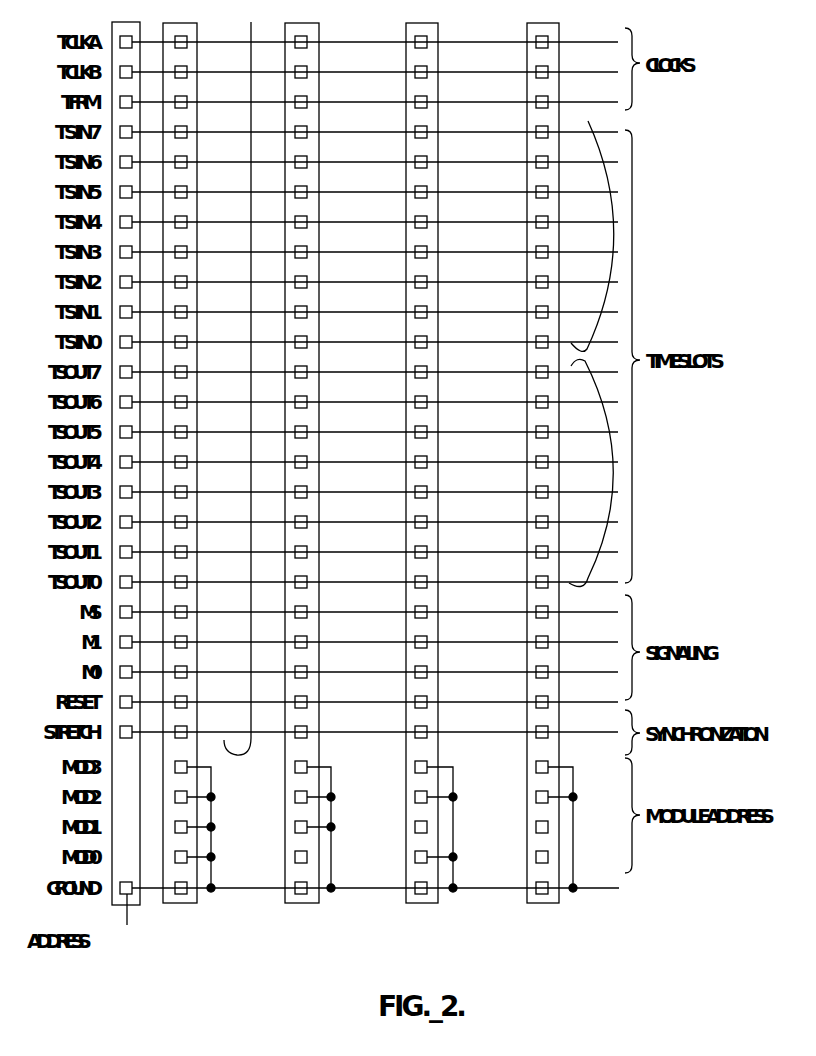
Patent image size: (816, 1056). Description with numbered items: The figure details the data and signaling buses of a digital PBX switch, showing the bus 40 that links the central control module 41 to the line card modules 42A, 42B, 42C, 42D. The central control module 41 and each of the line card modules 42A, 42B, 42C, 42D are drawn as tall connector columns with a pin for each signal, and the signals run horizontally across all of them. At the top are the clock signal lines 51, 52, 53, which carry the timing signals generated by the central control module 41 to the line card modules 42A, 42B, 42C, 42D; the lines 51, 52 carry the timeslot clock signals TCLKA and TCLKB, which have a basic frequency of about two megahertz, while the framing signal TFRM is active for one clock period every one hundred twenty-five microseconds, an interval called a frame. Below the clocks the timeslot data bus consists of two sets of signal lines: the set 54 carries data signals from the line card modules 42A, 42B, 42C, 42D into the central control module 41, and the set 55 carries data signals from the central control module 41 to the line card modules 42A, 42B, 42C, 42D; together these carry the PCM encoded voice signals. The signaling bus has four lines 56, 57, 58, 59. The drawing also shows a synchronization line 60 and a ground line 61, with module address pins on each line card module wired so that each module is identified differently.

The bus 40 is at (228, 36).
The central control module 41 is at (133, 905).
The line card module 42A is at (188, 904).
The line card module 42B is at (312, 904).
The line card module 42C is at (432, 904).
The line card module 42D is at (556, 904).
The clock signal line 51 is at (330, 38).
The clock signal line 52 is at (330, 68).
The clock signal line 53 is at (330, 98).
The set of signal lines 54 is at (575, 127).
The set of signal lines 55 is at (589, 360).
The signaling bus line 56 is at (575, 609).
The signaling bus line 57 is at (575, 639).
The signaling bus line 58 is at (575, 669).
The signaling bus line 59 is at (575, 699).
The stretch synchronization line 60 is at (575, 729).
The ground line 61 is at (619, 888).